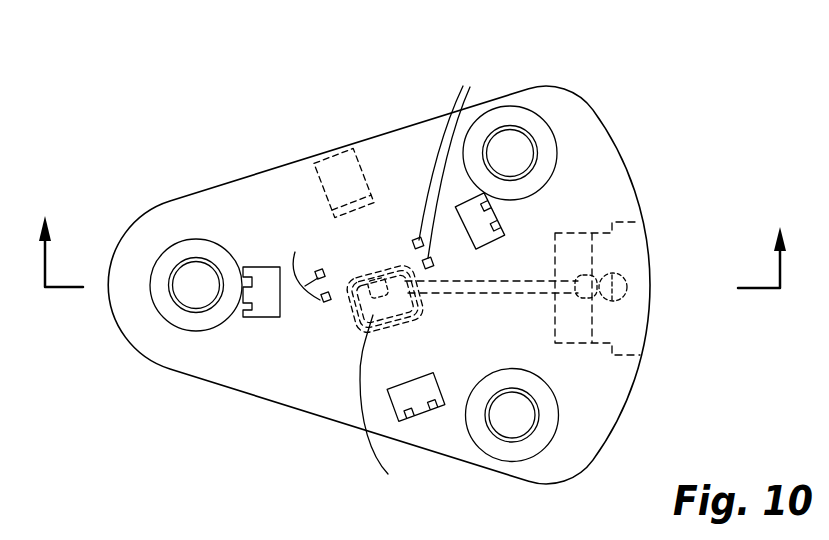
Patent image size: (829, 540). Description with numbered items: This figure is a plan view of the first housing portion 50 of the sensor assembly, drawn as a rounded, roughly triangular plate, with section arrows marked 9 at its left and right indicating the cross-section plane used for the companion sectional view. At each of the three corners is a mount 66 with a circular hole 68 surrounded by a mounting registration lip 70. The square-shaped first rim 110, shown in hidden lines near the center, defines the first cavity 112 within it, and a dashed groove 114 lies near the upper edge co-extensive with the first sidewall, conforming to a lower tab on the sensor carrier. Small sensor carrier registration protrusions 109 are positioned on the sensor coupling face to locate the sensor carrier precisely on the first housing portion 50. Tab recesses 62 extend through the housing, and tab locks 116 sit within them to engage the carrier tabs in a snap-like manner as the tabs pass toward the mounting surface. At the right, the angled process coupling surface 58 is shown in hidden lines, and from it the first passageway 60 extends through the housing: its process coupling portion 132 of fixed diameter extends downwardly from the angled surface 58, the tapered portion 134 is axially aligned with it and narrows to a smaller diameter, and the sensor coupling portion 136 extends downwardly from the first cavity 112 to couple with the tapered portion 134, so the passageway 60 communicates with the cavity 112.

The section line 9- 9 is at (411, 248).
The first housing portion 50 is at (110, 88).
The angled process coupling surface 58 is at (630, 244).
The first passageway 60 is at (636, 273).
The tab recesses 62 is at (263, 265).
The mount 66 is at (153, 308).
The hole 68 is at (178, 276).
The mounting registration lip 70 is at (200, 312).
The sensor carrier registration protrusions 109 is at (388, 180).
The first rim 110 is at (348, 325).
The first cavity 112 is at (388, 409).
The groove 114 is at (350, 175).
The tab locks 116 is at (250, 275).
The process coupling portion 132 is at (600, 297).
The tapered portion 134 is at (512, 283).
The sensor coupling portion 136 is at (389, 262).